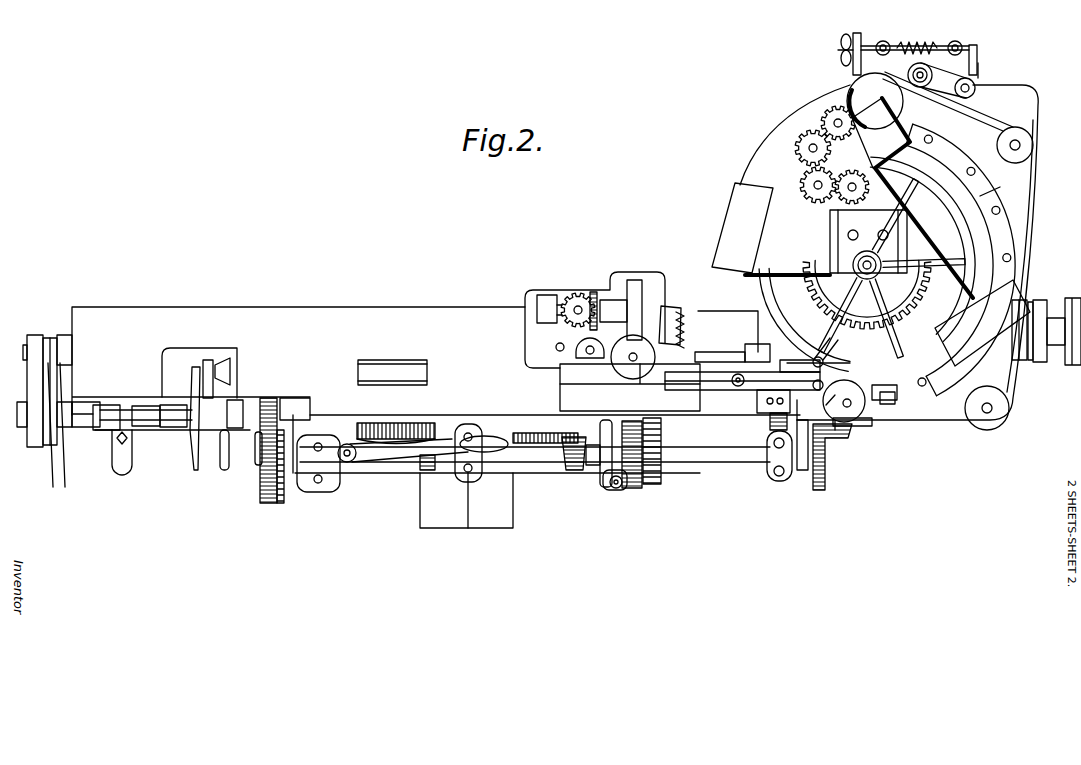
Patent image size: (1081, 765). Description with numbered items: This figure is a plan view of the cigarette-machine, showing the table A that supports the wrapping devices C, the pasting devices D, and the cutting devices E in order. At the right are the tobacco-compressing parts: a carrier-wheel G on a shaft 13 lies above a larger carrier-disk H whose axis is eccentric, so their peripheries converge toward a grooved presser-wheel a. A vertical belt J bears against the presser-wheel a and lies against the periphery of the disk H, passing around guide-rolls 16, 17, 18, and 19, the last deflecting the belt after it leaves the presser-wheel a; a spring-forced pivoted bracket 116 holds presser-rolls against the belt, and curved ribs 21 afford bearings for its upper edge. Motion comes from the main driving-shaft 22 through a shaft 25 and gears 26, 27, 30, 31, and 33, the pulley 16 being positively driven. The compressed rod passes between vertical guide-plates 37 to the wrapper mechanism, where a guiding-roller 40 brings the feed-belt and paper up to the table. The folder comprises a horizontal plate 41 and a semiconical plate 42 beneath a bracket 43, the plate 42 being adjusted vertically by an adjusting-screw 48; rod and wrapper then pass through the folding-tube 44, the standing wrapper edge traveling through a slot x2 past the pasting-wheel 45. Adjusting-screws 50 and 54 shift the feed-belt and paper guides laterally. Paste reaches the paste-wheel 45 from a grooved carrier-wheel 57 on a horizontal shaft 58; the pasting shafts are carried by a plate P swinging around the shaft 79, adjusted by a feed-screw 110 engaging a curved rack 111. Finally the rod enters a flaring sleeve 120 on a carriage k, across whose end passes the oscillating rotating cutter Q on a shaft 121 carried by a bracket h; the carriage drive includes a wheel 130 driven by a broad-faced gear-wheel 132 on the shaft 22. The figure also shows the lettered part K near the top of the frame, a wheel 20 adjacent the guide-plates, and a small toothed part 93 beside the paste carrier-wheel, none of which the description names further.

The shaft 13 is at (882, 270).
The guide-roll 16 is at (893, 106).
The guide-roll 17 is at (1034, 148).
The guide-roll 18 is at (1010, 418).
The guide-roll 19 is at (853, 422).
The wheel 20 is at (840, 370).
The curved ribs 21 is at (1001, 184).
The main driving-shaft 22 is at (741, 458).
The shaft 25 is at (815, 185).
The gear 26 is at (818, 490).
The gear 27 is at (841, 442).
The gear 30 is at (832, 112).
The gear 31 is at (829, 198).
The gear 33 is at (862, 318).
The vertical guide-plates 37 is at (817, 367).
The guiding-roller 40 is at (62, 425).
The horizontal plate 41 is at (703, 370).
The semiconical plate 42 is at (785, 372).
The bracket 43 is at (742, 400).
The folding-tube 44 is at (690, 380).
The pasting-wheel 45 is at (631, 374).
The adjusting-screw 48 is at (733, 385).
The adjusting-screw 50 is at (770, 422).
The adjusting-screw 54 is at (787, 450).
The carrier-wheel 57 is at (635, 290).
The horizontal shaft 58 is at (571, 303).
The shaft 79 is at (557, 352).
The rack 93 is at (604, 276).
The feed-screw 110 is at (695, 338).
The curved rack 111 is at (668, 310).
The pivoted bracket 116 is at (890, 392).
The flaring sleeve 120 is at (235, 370).
The shaft 121 is at (140, 405).
The wheel 130 is at (283, 402).
The broad-faced gear-wheel 132 is at (272, 503).
The table A is at (436, 417).
The plate P is at (525, 342).
The pasting devices D is at (618, 257).
The slot x2 is at (630, 387).
The wrapping devices C is at (742, 364).
The grooved presser-wheel a is at (880, 372).
The carriage k is at (107, 427).
The bracket h is at (176, 427).
The oscillating rotating cutter Q is at (192, 452).
The cutting devices E is at (145, 511).
The vertical belt J is at (1038, 232).
The spring bar K is at (978, 65).
The carrier-disk H is at (945, 170).
The carrier-wheel G is at (960, 228).